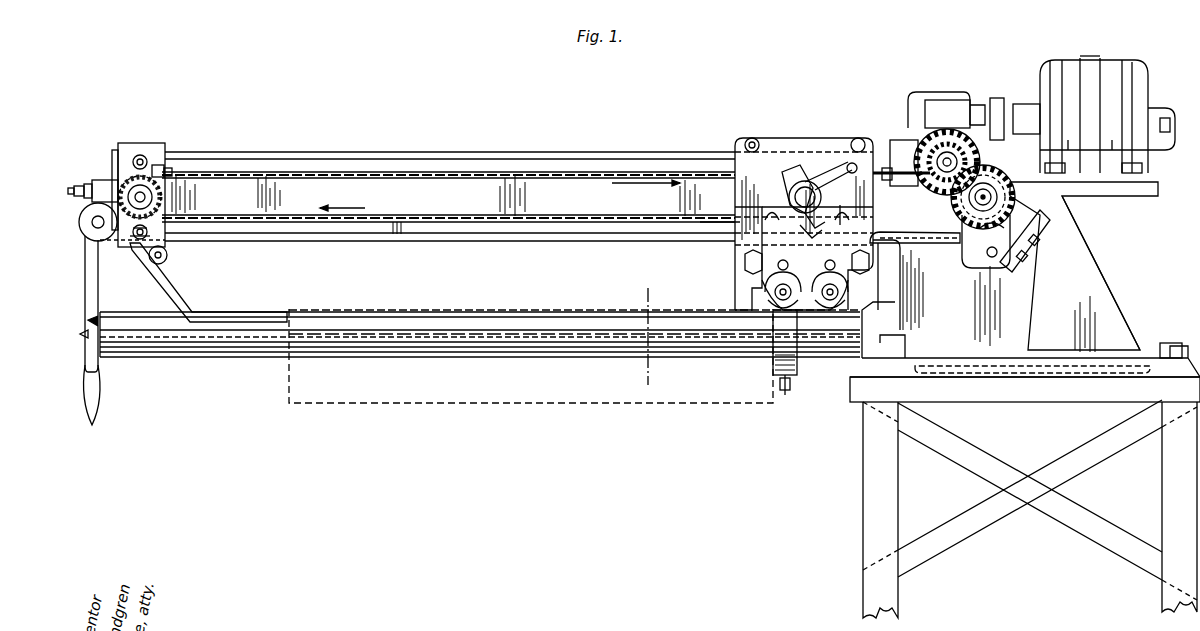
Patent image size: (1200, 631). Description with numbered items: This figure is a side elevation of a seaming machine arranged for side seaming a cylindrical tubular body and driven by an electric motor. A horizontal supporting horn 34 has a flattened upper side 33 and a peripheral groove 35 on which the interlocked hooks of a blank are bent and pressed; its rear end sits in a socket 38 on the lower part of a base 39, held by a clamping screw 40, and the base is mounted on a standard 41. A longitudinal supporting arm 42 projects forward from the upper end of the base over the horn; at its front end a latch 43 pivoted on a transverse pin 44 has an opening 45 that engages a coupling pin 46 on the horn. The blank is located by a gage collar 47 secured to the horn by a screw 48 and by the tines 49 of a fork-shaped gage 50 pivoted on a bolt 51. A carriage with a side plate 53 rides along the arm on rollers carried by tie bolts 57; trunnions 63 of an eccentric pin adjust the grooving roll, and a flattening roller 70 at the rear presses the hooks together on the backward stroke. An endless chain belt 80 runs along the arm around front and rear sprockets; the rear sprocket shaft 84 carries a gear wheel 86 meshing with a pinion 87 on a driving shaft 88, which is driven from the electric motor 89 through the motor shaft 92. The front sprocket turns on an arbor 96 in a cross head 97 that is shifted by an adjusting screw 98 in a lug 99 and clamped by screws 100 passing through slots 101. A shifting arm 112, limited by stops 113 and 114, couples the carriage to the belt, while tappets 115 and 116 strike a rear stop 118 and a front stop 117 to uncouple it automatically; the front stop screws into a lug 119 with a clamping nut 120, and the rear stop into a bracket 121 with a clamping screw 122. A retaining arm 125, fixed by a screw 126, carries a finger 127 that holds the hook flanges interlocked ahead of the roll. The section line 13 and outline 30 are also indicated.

The section line 13 is at (647, 331).
The frame outline 30 is at (531, 363).
The flattened upper side 33 is at (488, 316).
The supporting horn 34 is at (155, 350).
The groove 35 is at (135, 332).
The socket 38 is at (888, 296).
The base 39 is at (978, 312).
The clamping screw 40 is at (1025, 360).
The standard 41 is at (1028, 396).
The supporting arm 42 is at (442, 156).
The latch 43 is at (85, 288).
The transverse pin 44 is at (94, 224).
The opening 45 is at (90, 320).
The coupling pin 46 is at (82, 335).
The gage collar 47 is at (798, 365).
The screw 48 is at (790, 389).
The tines 49 is at (252, 312).
The fork-shaped gage 50 is at (188, 312).
The screw or bolt 51 is at (168, 256).
The side plate 53 is at (792, 142).
The tie bolts 57 is at (870, 262).
The trunnions 63 is at (915, 233).
The flattening roller 70 is at (820, 290).
The endless belt 80 is at (1122, 198).
The transverse shaft 84 is at (992, 200).
The gear wheel 86 is at (1008, 186).
The gear pinion 87 is at (948, 135).
The driving shaft 88 is at (944, 166).
The electric motor 89 is at (1132, 78).
The motor shaft 92 is at (1172, 118).
The arbor or pivot pin 96 is at (138, 195).
The cross head 97 is at (128, 147).
The adjusting screw 98 is at (74, 193).
The lug 99 is at (104, 184).
The clamping screws 100 is at (142, 156).
The longitudinal slots 101 is at (150, 237).
The shifting arm 112 is at (831, 169).
The stop 113 is at (780, 225).
The stop 114 is at (844, 225).
The front tappet 115 is at (814, 239).
The rear tappet 116 is at (798, 178).
The front stop 117 is at (235, 170).
The rear stop 118 is at (836, 205).
The lug 119 is at (160, 170).
The clamping nut 120 is at (170, 172).
The bracket 121 is at (896, 144).
The clamping screw 122 is at (858, 140).
The retaining arm 125 is at (745, 258).
The screw 126 is at (762, 282).
The finger 127 is at (752, 140).